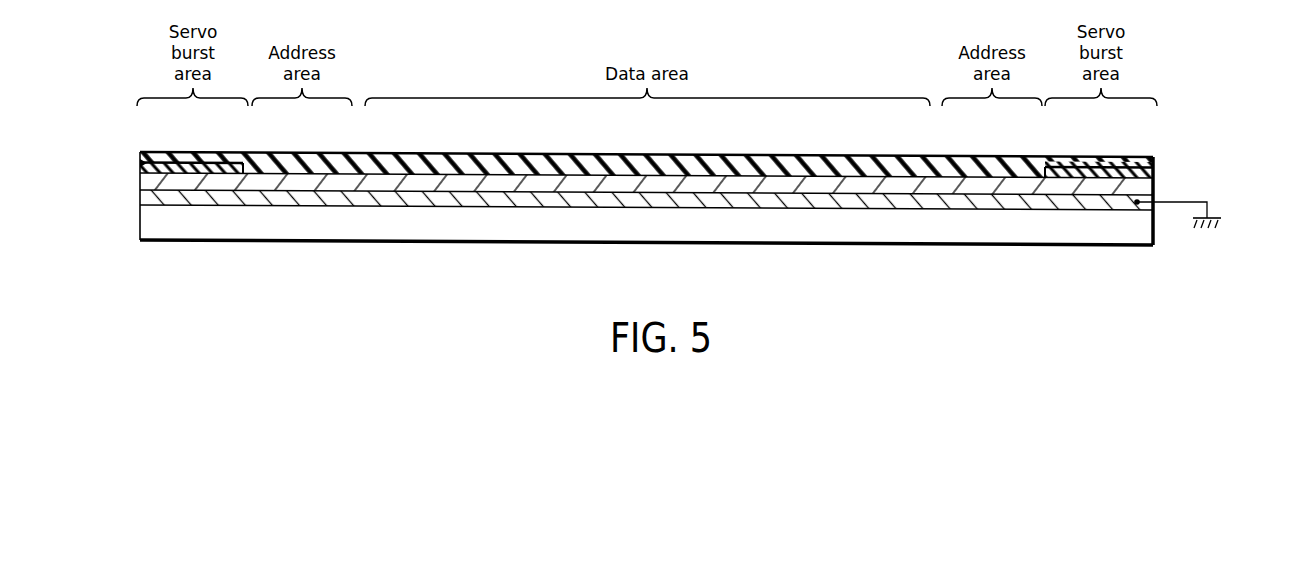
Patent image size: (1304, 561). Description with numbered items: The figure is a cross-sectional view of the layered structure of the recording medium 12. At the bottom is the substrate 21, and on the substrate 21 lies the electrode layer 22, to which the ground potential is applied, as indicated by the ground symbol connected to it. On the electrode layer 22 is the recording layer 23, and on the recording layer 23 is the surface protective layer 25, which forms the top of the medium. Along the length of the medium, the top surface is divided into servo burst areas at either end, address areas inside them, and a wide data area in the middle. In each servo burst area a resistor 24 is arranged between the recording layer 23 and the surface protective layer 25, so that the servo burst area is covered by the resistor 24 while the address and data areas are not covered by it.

The recording medium 12 is at (1235, 148).
The substrate 21 is at (1146, 231).
The electrode layer 22 is at (148, 198).
The recording layer 23 is at (1146, 188).
The resistor 24 is at (142, 163).
The surface protective layer 25 is at (550, 157).